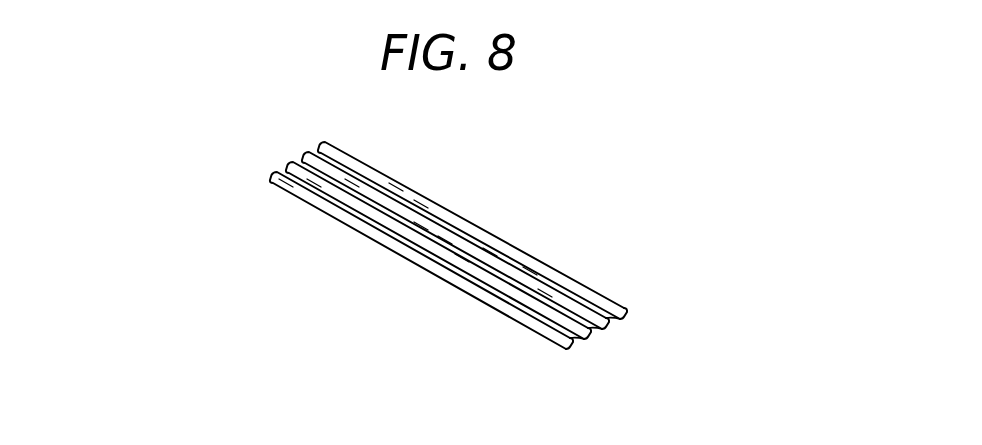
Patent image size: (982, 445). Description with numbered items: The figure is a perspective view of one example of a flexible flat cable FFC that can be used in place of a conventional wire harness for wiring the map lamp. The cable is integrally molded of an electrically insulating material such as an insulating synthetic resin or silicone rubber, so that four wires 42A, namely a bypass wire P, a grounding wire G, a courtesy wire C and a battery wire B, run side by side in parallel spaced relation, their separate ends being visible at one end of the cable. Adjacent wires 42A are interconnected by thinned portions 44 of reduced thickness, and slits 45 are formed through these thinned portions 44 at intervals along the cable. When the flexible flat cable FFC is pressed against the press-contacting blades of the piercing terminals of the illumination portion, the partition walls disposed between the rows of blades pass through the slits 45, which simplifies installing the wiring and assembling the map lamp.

The flexible flat cable FFC is at (433, 282).
The wires 42A is at (394, 189).
The slits 45 is at (442, 261).
The thinned portions 44 is at (543, 294).
The bypass wire P is at (570, 343).
The grounding wire G is at (588, 334).
The courtesy wire C is at (605, 323).
The battery wire B is at (623, 313).